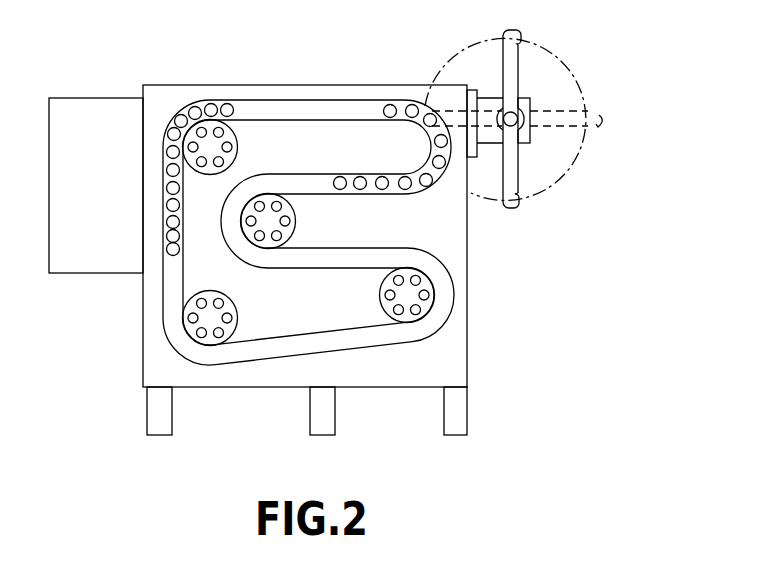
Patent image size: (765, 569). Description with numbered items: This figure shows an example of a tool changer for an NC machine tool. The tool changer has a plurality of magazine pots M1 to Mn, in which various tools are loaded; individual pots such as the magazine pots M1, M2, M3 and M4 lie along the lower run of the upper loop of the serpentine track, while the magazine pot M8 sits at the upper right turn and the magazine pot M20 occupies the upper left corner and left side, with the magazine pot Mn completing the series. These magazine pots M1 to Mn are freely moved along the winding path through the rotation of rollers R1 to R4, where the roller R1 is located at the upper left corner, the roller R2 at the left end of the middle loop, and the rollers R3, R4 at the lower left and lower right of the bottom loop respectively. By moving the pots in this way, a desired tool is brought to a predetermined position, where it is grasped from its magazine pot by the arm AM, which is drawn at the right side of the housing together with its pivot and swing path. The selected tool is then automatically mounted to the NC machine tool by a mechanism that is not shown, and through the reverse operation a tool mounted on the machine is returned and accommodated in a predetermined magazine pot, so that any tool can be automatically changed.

The magazine pot M20 is at (191, 100).
The magazine pot M8 is at (395, 102).
The magazine pot Mn is at (360, 177).
The magazine pot M1 is at (382, 190).
The magazine pot M2 is at (406, 190).
The magazine pot M3 is at (447, 165).
The magazine pot M4 is at (451, 162).
The roller R1 is at (240, 149).
The roller R2 is at (296, 223).
The roller R3 is at (243, 323).
The roller R4 is at (379, 302).
The arm AM is at (518, 83).